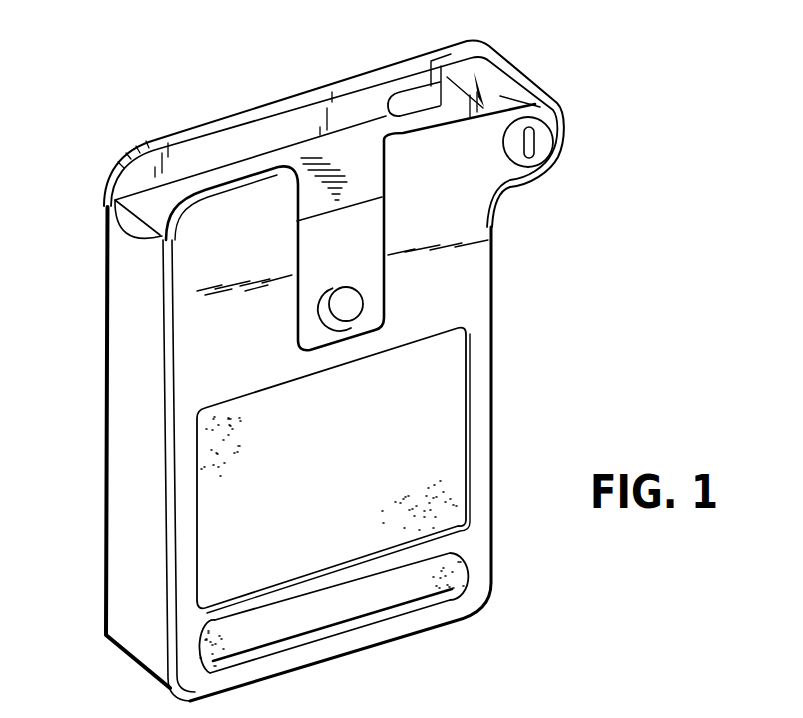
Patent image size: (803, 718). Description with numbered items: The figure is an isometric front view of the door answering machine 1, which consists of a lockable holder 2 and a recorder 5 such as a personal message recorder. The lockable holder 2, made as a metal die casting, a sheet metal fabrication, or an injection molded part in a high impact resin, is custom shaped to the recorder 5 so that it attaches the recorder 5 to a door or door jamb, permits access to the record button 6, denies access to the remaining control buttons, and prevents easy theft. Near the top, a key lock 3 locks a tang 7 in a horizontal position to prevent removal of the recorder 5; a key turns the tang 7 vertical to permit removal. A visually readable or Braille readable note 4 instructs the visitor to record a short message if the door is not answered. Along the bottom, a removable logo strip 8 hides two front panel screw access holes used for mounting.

The door answering machine 1 is at (198, 106).
The lockable holder 2 is at (121, 432).
The key lock 3 is at (545, 137).
The note 4 is at (450, 390).
The recorder 5 is at (150, 203).
The record button 6 is at (343, 308).
The tang 7 is at (410, 92).
The removable logo strip 8 is at (428, 578).